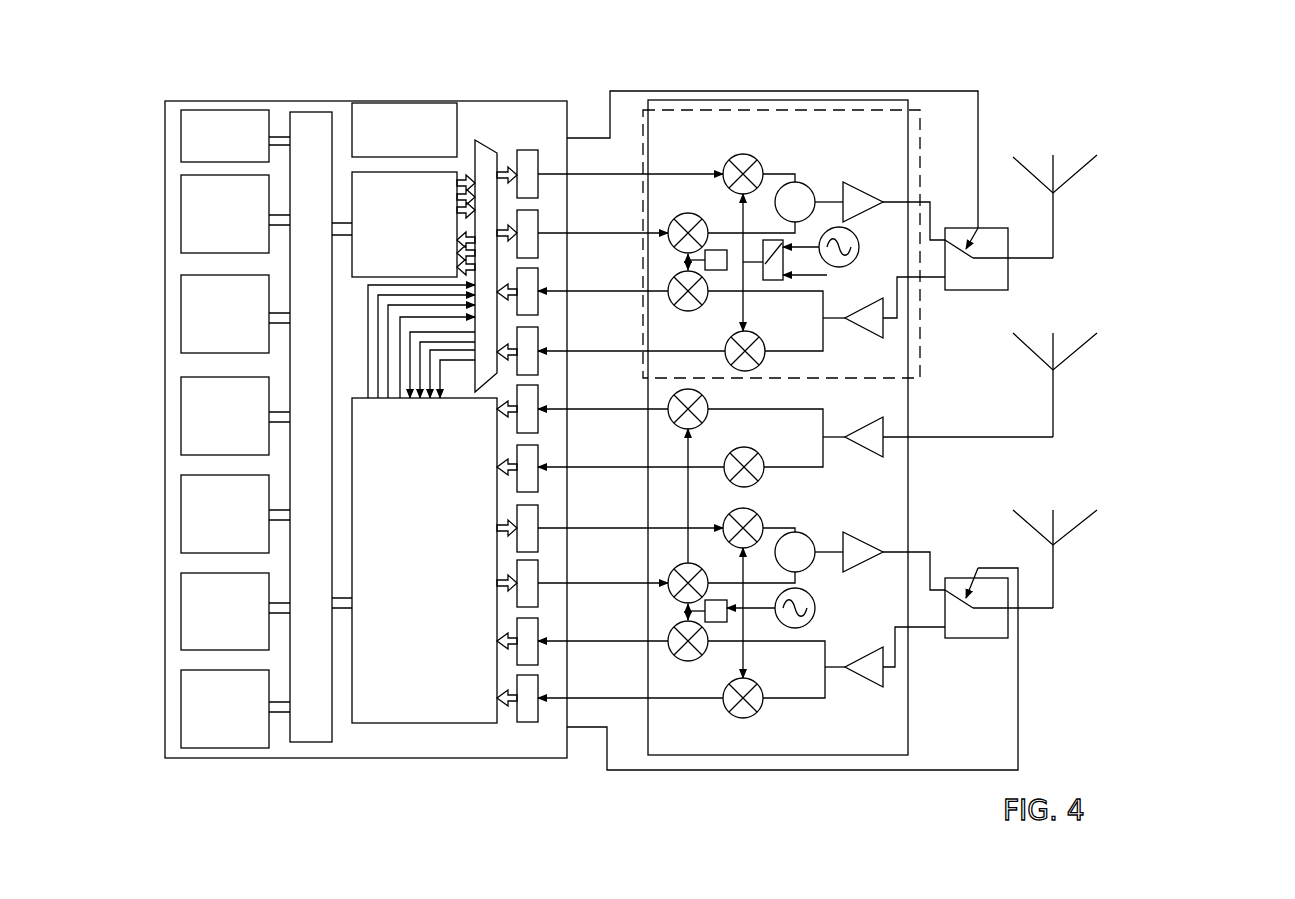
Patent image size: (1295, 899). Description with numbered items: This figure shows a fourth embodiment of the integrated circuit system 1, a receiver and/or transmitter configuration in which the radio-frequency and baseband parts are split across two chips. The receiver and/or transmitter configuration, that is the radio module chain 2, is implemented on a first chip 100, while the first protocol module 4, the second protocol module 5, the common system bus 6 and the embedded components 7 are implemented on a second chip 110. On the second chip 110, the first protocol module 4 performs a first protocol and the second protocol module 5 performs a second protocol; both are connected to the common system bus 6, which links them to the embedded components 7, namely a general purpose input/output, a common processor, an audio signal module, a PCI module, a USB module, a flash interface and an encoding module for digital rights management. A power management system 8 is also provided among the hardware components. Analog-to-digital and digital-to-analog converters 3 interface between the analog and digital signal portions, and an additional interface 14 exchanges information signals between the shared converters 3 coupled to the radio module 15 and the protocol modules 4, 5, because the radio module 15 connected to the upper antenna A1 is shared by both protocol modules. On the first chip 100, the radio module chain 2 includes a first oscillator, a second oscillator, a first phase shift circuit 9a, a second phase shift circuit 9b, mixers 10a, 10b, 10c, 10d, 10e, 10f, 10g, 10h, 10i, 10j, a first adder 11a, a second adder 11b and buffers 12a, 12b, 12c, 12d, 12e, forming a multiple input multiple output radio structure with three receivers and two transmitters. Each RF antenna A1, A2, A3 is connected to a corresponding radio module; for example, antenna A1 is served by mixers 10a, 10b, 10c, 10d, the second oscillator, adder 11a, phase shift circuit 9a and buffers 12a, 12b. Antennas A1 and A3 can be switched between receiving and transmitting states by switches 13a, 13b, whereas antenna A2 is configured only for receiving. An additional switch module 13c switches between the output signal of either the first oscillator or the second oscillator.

The integrated circuit system 1 is at (678, 422).
The radio module chain 2 is at (820, 725).
The first chip 100 is at (779, 457).
The analog-to-digital converters and digital-to-analog converters 3 is at (524, 483).
The first protocol module 4 is at (426, 570).
The second protocol module 5 is at (412, 240).
The common system bus 6 is at (318, 456).
The embedded components 7 is at (366, 422).
The power management system 8 is at (412, 143).
The first phase shift circuit 9a is at (720, 250).
The second phase shift circuit 9b is at (720, 622).
The mixer 10a is at (751, 155).
The mixer 10b is at (678, 214).
The mixer 10c is at (683, 311).
The mixer 10d is at (762, 360).
The mixer 10e is at (686, 389).
The mixer 10f is at (756, 450).
The mixer 10g is at (760, 515).
The mixer 10h is at (683, 570).
The mixer 10i is at (683, 660).
The mixer 10j is at (748, 715).
The first adder 11a is at (802, 183).
The second adder 11b is at (813, 538).
The buffer 12a is at (858, 189).
The buffer 12b is at (885, 330).
The buffer 12c is at (887, 425).
The buffer 12d is at (860, 532).
The buffer 12e is at (885, 678).
The switch 13a is at (1010, 277).
The switch 13b is at (993, 640).
The additional switch module 13c is at (775, 281).
The additional interface 14 is at (485, 162).
The radio module 15 is at (923, 118).
The second chip 110 is at (175, 162).
The RF antenna A1 is at (1057, 230).
The RF antenna A2 is at (1057, 407).
The RF antenna A3 is at (1057, 565).